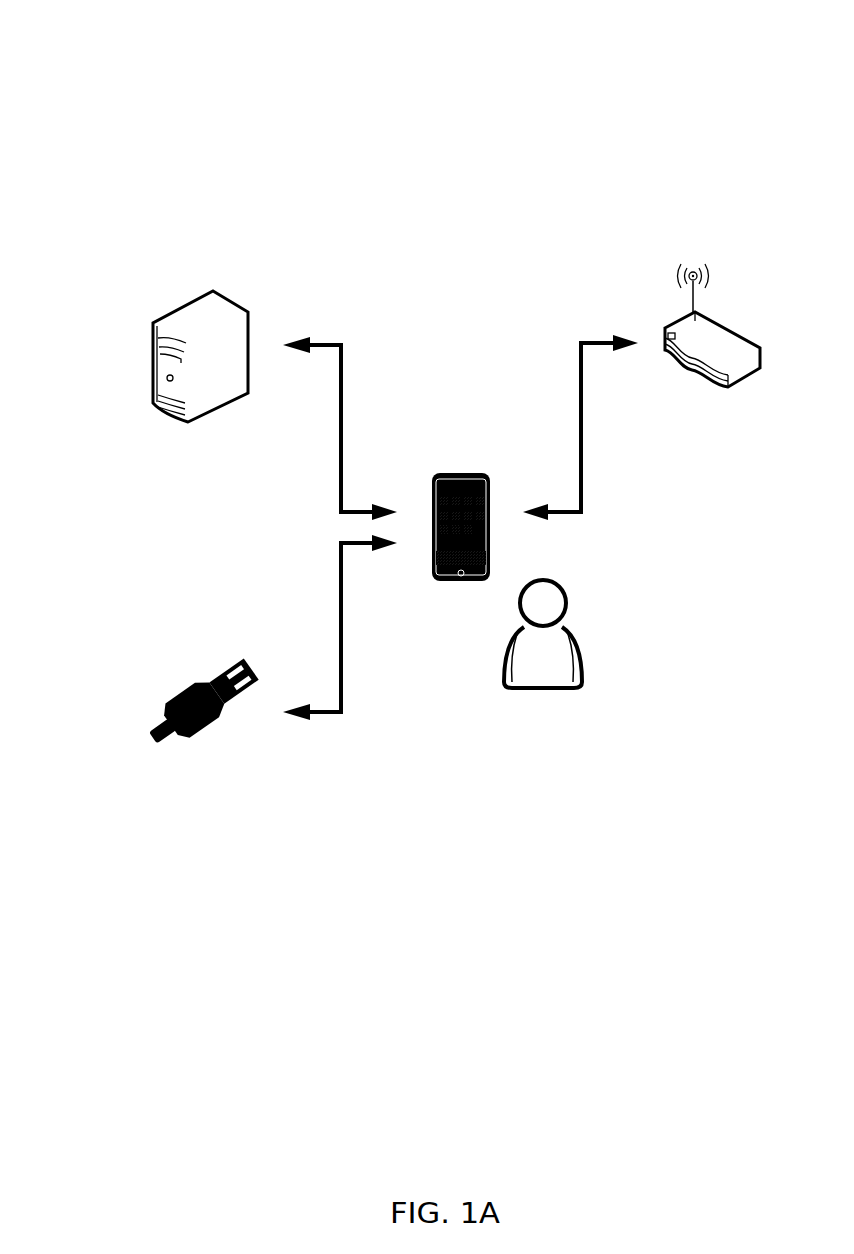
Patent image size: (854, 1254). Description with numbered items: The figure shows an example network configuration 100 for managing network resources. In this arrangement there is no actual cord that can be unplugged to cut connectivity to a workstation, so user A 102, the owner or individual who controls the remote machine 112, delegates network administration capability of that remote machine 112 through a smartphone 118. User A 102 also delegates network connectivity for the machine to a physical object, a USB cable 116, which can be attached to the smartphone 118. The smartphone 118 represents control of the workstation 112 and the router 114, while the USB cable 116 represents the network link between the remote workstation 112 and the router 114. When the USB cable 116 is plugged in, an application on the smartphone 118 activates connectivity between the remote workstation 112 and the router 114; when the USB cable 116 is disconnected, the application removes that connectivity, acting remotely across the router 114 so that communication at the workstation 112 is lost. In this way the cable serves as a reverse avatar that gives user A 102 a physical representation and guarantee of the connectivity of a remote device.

The network configuration 100 is at (25, 65).
The user A 102 is at (543, 649).
The remote machine 112 is at (200, 371).
The router 114 is at (714, 341).
The USB cable 116 is at (202, 714).
The smartphone 118 is at (461, 544).